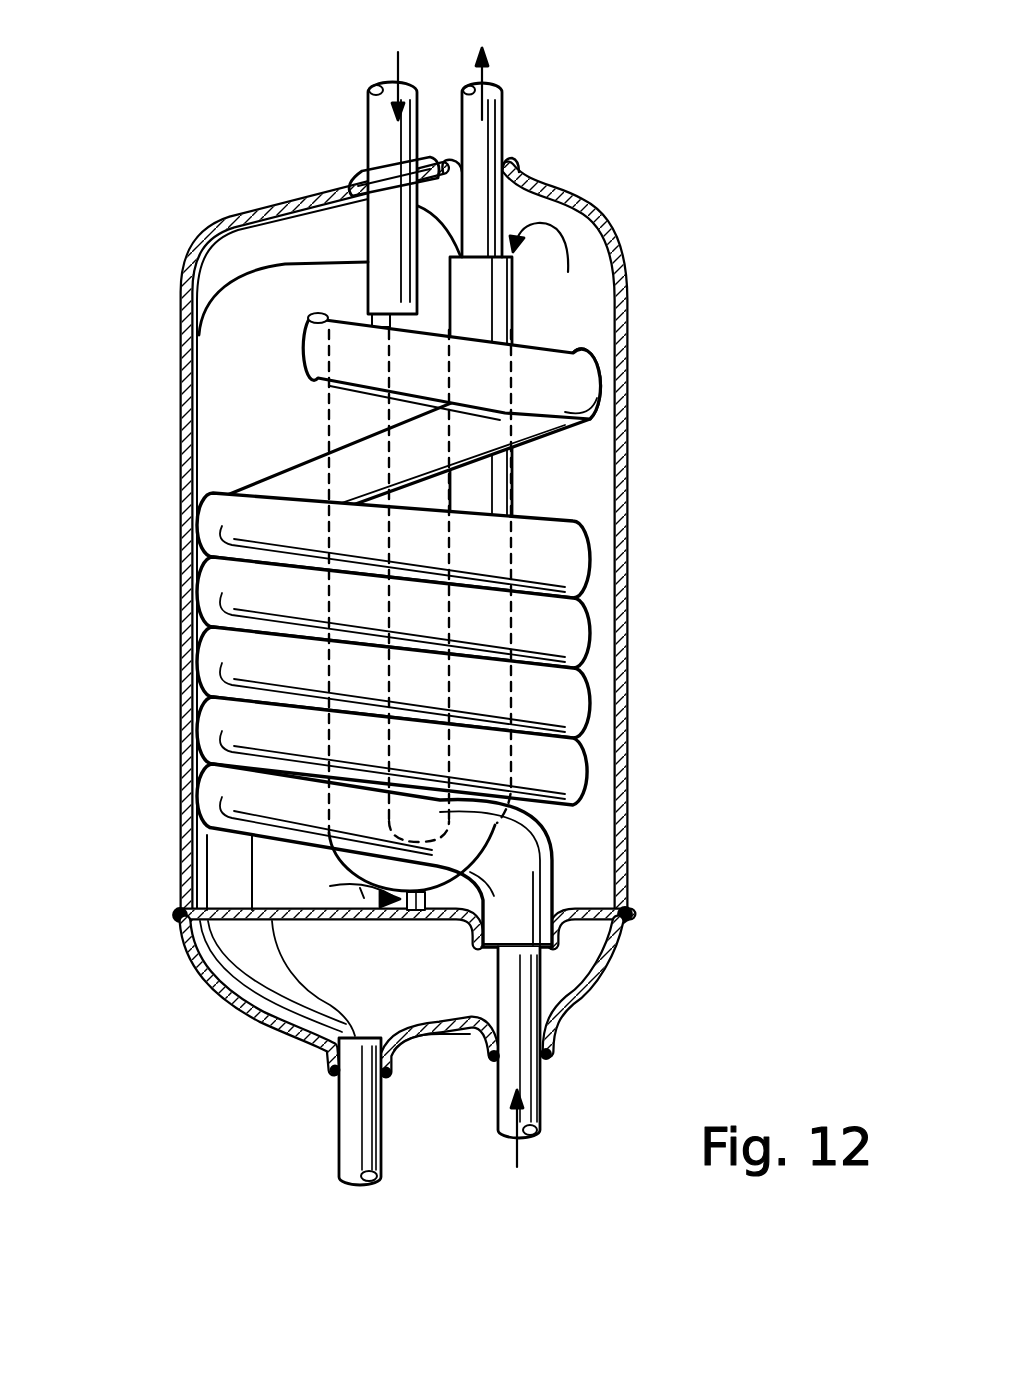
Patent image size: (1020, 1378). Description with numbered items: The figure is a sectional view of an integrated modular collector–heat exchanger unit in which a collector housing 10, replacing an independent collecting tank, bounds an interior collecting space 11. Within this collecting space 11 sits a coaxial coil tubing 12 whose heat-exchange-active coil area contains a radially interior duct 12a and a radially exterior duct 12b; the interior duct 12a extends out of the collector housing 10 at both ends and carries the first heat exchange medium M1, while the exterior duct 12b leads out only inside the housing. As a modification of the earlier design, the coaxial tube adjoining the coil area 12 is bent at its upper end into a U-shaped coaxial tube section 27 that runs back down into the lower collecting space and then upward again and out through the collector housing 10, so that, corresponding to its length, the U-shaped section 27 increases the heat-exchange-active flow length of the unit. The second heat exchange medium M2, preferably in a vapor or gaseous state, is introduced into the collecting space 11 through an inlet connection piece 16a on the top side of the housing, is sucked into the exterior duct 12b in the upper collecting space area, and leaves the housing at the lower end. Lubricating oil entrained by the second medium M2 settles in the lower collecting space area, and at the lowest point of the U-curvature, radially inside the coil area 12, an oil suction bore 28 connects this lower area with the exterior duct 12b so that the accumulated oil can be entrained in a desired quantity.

The collector housing 10 is at (182, 598).
The collecting space 11 is at (590, 467).
The coaxial coil tubing 12 is at (575, 633).
The radially interior duct 12a is at (492, 137).
The radially exterior duct 12b is at (352, 185).
The inlet connection piece 16a is at (380, 135).
The U-shaped coaxial tube section 27 is at (343, 413).
The oil suction bore 28 is at (415, 922).
The first heat exchange medium M1 is at (483, 110).
The second heat exchange medium M2 is at (400, 63).